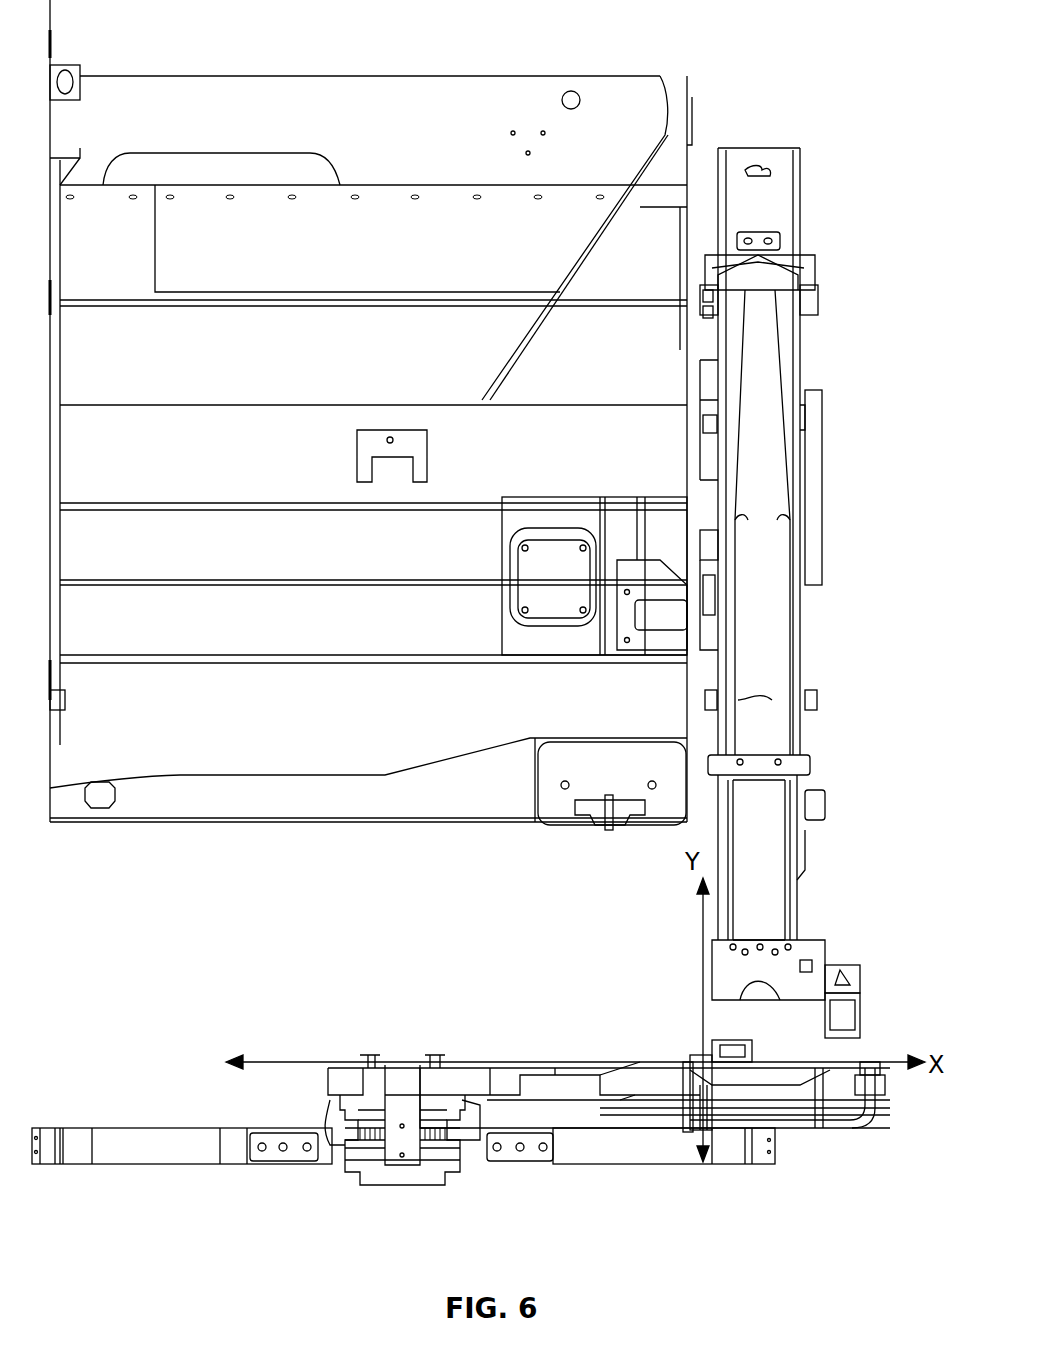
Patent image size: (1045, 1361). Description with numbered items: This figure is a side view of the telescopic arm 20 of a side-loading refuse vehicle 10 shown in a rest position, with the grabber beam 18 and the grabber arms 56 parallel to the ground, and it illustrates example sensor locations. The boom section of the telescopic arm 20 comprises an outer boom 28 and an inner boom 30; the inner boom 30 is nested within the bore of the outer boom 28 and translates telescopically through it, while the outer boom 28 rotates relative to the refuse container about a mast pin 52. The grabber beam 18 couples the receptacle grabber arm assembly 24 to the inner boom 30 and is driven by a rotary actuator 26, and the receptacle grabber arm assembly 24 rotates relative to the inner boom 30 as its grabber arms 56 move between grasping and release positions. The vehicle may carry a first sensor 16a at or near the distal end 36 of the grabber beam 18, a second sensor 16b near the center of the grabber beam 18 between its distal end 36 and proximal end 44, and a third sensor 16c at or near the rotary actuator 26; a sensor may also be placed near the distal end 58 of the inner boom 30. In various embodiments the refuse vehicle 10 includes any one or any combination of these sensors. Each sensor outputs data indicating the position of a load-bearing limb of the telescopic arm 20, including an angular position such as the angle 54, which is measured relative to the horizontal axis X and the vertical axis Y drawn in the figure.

The side-loading refuse vehicle 10 is at (820, 58).
The telescopic arm 20 is at (853, 546).
The mast pin 52 is at (822, 415).
The outer boom 28 is at (782, 630).
The inner boom 30 is at (778, 812).
The distal end of the inner boom 58 is at (800, 940).
The rotary actuator 26 is at (848, 988).
The third sensor 16c is at (852, 1012).
The grabber beam 18 is at (540, 1062).
The angle 54 is at (690, 1052).
The distal end of the grabber beam 36 is at (315, 1082).
The receptacle grabber arm assembly 24 is at (402, 1198).
The grabber arms 56 is at (170, 1162).
The first sensor 16a is at (312, 1146).
The second sensor 16b is at (505, 1100).
The proximal end of the grabber beam 44 is at (900, 1120).